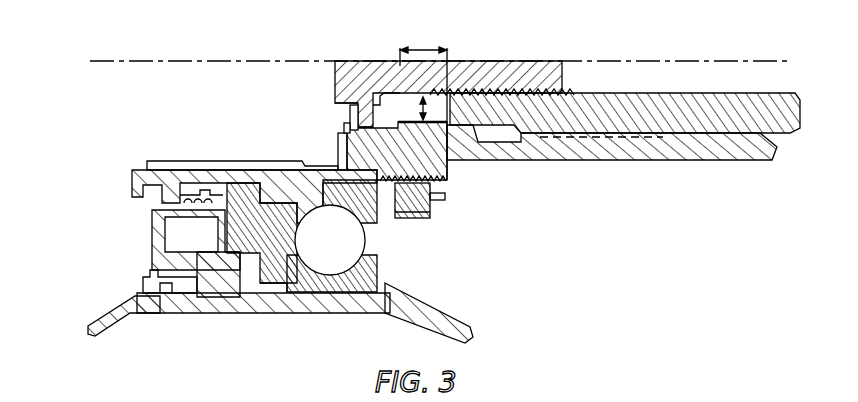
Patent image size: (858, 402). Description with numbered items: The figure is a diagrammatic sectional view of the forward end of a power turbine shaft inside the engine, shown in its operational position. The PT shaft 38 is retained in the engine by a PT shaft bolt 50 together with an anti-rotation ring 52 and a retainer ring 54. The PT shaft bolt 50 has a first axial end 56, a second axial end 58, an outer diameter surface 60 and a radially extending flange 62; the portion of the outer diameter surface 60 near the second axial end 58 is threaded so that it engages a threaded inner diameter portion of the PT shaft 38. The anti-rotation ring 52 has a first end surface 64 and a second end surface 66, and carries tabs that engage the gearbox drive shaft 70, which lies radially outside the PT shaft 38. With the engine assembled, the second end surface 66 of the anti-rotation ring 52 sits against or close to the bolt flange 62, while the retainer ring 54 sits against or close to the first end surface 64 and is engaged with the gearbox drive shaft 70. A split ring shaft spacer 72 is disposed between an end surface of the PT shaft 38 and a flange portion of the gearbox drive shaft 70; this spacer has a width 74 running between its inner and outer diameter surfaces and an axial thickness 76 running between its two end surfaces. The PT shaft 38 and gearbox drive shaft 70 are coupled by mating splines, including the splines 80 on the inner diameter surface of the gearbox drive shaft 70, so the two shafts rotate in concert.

The PT shaft 38 is at (727, 115).
The PT shaft bolt 50 is at (560, 61).
The anti-rotation ring 52 is at (350, 118).
The retainer ring 54 is at (338, 131).
The first axial end 56 is at (335, 93).
The second axial end 58 is at (566, 90).
The outer diameter surface 60 is at (413, 184).
The radially extending flange 62 is at (370, 120).
The first end surface 64 is at (344, 128).
The second end surface 66 is at (363, 113).
The gearbox drive shaft 70 is at (537, 152).
The split ring shaft spacer 72 is at (410, 112).
The width 74 is at (420, 126).
The axial thickness 76 is at (432, 50).
The splines 80 is at (560, 139).